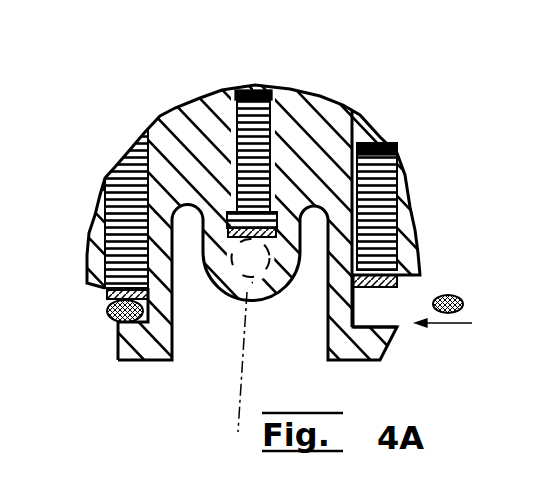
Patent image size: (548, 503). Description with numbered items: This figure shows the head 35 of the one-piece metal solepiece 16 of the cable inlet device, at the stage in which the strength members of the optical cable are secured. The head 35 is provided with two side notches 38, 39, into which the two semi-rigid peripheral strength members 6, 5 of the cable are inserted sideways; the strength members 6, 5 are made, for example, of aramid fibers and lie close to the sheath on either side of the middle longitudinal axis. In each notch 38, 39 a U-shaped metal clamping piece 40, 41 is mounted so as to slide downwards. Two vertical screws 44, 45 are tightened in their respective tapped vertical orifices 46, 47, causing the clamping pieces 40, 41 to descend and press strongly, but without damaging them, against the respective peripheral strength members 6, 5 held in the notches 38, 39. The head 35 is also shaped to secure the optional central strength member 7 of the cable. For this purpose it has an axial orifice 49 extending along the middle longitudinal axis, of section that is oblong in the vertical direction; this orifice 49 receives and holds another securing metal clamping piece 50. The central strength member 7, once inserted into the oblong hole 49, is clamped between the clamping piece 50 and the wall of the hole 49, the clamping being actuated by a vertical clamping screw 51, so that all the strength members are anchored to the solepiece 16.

The metal solepiece 16 is at (223, 72).
The head 35 is at (179, 75).
The tapped vertical orifice 46 is at (118, 139).
The vertical screw 44 is at (87, 232).
The tapped vertical orifice 47 is at (380, 130).
The vertical screw 45 is at (398, 208).
The vertical clamping screw 51 is at (281, 113).
The securing metal clamping piece 50 is at (237, 298).
The axial orifice 49 is at (284, 250).
The central strength member 7 is at (232, 383).
The U-shaped metal clamping piece 41 is at (386, 292).
The U-shaped metal clamping piece 40 is at (104, 296).
The side notch 38 is at (96, 329).
The side notch 39 is at (387, 311).
The peripheral strength member 5 is at (463, 306).
The peripheral strength member 6 is at (135, 328).